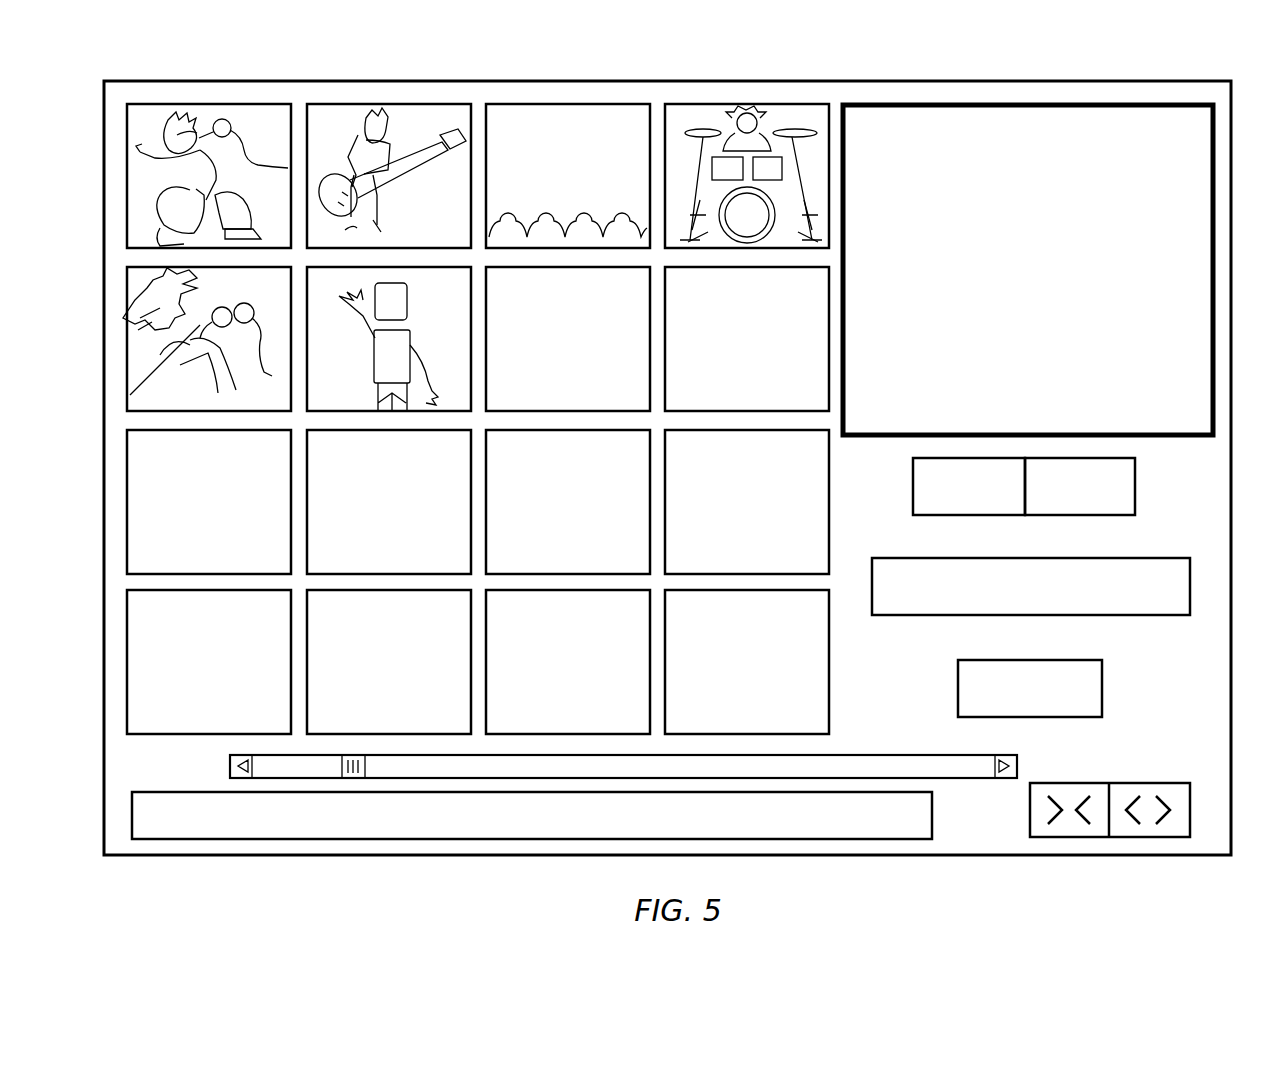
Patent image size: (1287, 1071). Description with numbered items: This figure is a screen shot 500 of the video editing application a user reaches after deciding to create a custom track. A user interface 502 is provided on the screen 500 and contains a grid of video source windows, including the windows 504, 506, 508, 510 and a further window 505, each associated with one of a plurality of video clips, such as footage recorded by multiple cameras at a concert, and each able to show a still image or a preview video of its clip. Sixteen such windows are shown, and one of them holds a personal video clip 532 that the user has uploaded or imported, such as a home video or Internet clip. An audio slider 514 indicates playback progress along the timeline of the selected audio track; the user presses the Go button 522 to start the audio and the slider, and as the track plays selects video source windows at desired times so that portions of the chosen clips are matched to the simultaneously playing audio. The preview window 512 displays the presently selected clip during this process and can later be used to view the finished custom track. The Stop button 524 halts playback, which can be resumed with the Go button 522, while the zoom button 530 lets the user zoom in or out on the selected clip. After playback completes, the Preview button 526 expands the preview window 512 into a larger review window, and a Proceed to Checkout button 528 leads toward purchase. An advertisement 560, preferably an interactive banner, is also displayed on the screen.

The screen shot 500 is at (268, 38).
The user interface 502 is at (1148, 80).
The video source window 504 is at (208, 103).
The content tile 505 is at (207, 339).
The video source window 506 is at (410, 103).
The video source window 508 is at (572, 103).
The video source window 510 is at (740, 103).
The preview window 512 is at (983, 103).
The audio slider 514 is at (833, 755).
The Go button 522 is at (912, 492).
The Stop button 524 is at (1137, 478).
The Preview button 526 is at (957, 695).
The Proceed to Checkout button 528 is at (1087, 615).
The zoom button 530 is at (1109, 783).
The video clip 532 is at (348, 413).
The advertisement 560 is at (935, 800).